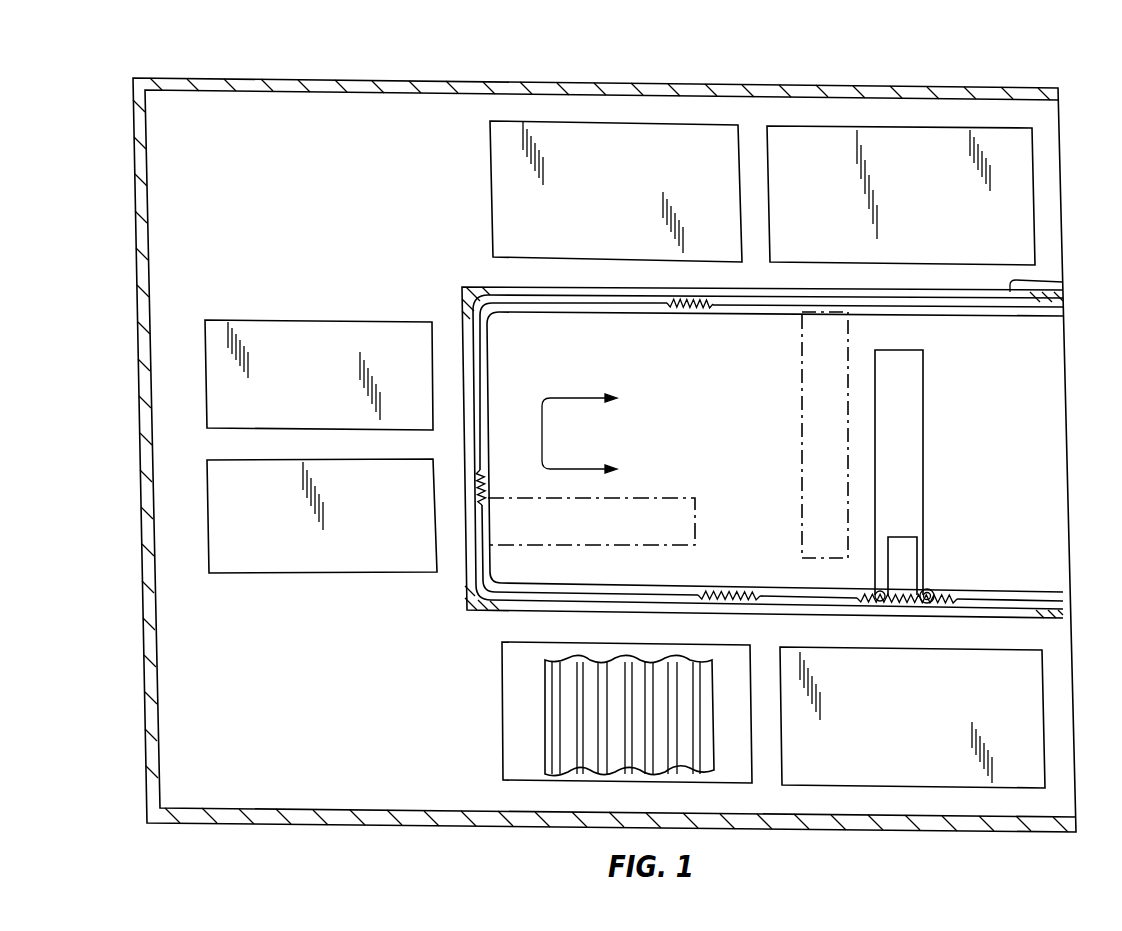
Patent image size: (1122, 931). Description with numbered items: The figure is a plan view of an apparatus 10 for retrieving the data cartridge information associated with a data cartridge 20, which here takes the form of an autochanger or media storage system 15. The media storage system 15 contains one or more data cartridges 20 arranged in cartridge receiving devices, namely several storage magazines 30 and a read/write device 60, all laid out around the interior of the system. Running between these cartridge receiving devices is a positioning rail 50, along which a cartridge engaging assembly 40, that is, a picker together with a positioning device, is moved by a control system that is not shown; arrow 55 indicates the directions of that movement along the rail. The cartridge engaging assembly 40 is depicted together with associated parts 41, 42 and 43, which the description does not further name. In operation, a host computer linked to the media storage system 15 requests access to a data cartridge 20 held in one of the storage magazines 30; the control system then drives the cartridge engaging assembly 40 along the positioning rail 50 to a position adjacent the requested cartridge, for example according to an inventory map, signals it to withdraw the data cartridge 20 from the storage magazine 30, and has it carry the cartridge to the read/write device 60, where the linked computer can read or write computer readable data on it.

The apparatus 10 is at (988, 62).
The media storage system 15 is at (240, 78).
The data cartridge 20 is at (590, 777).
The storage magazine 30 is at (785, 126).
The cartridge engaging assembly 40 is at (940, 466).
The piston 41 is at (925, 376).
The circuit board 42 is at (668, 498).
The valve 43 is at (802, 370).
The positioning rail 50 is at (1047, 583).
The arrow 55 is at (542, 432).
The read/write device 60 is at (236, 459).